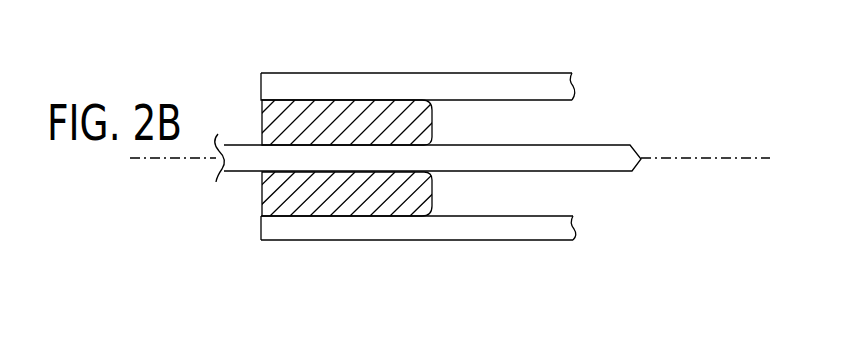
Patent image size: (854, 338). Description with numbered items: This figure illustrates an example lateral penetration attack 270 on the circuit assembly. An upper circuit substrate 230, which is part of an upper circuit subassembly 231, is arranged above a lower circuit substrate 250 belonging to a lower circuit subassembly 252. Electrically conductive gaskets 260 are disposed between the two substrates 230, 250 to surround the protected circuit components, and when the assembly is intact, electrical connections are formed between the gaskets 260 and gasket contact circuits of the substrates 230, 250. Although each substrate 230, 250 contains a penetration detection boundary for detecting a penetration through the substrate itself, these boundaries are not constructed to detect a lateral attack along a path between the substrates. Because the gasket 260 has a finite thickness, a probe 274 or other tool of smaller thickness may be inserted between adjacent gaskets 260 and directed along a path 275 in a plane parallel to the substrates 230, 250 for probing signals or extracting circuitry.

The upper circuit substrate 230 is at (495, 82).
The upper circuit subassembly 231 is at (478, 82).
The lower circuit substrate 250 is at (367, 230).
The lower circuit subassembly 252 is at (413, 240).
The electrically conductive gasket 260 is at (318, 123).
The assembly 270 is at (628, 58).
The probe 274 is at (603, 157).
The path 275 is at (705, 160).